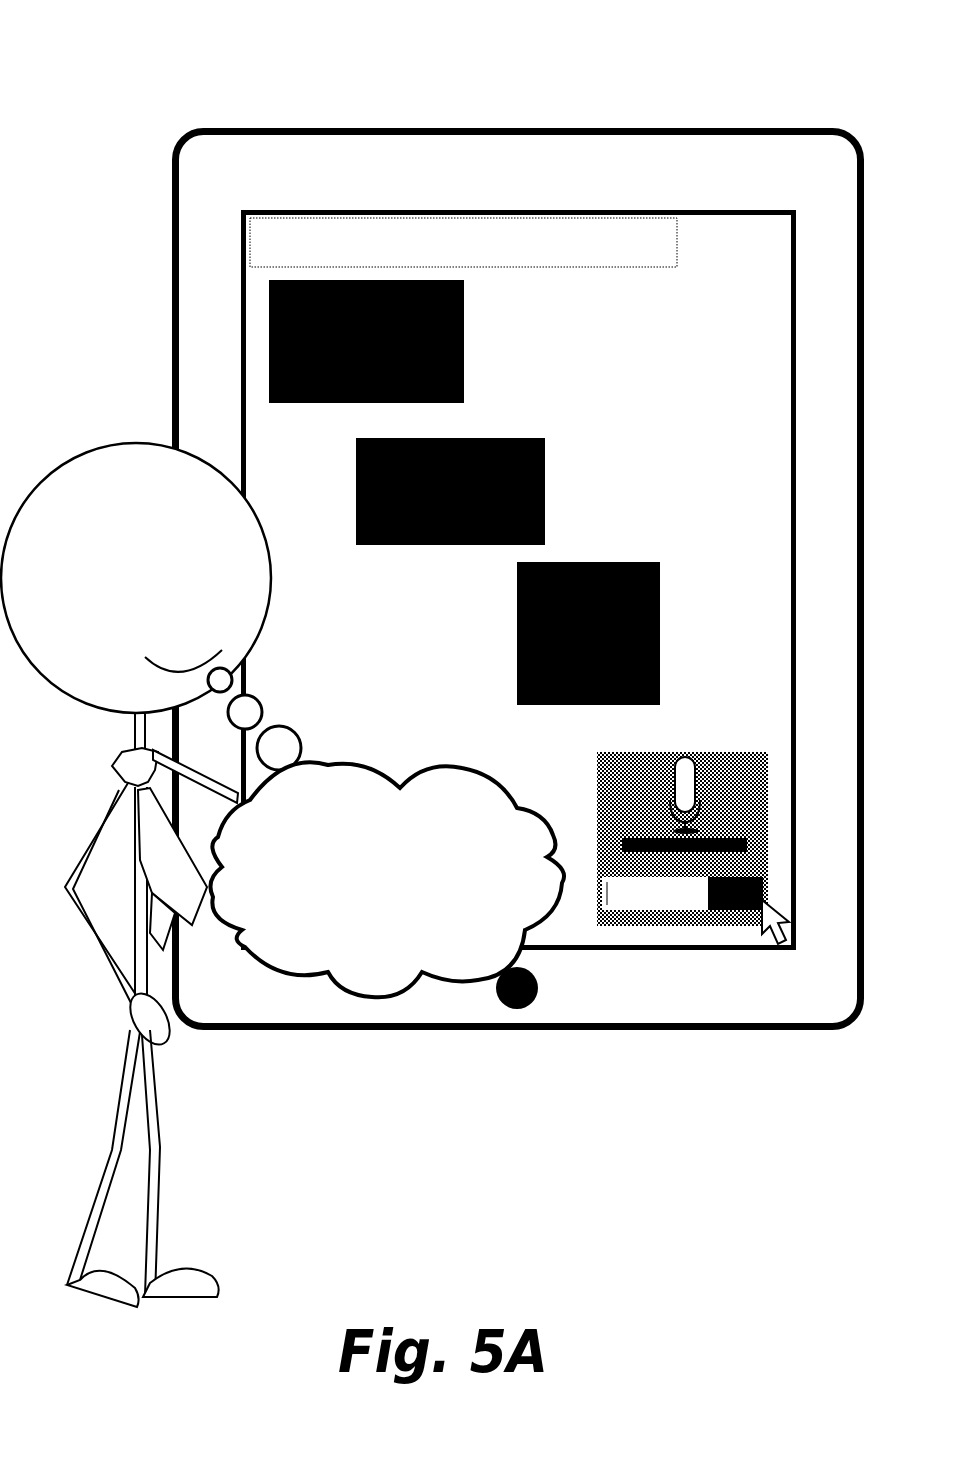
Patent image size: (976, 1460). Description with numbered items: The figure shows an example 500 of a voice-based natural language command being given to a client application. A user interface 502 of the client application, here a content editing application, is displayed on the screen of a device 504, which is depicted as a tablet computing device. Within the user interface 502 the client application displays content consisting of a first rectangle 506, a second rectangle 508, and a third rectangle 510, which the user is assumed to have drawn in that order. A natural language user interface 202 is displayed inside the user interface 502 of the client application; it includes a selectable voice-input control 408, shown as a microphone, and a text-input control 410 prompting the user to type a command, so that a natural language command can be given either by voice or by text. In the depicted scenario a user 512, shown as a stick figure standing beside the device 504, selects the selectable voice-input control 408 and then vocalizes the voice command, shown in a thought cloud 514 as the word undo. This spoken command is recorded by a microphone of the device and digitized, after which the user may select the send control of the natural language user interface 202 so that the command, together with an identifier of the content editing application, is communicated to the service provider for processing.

The example 500 is at (431, 660).
The device 504 is at (233, 184).
The user interface 502 is at (774, 254).
The first rectangle 506 is at (385, 349).
The second rectangle 508 is at (469, 499).
The third rectangle 510 is at (606, 640).
The user 512 is at (154, 563).
The user thought / spoken command (Undo) 514 is at (406, 826).
The selectable voice-input control 408 is at (726, 813).
The text-input control 410 is at (623, 900).
The natural language user interface 202 is at (648, 785).